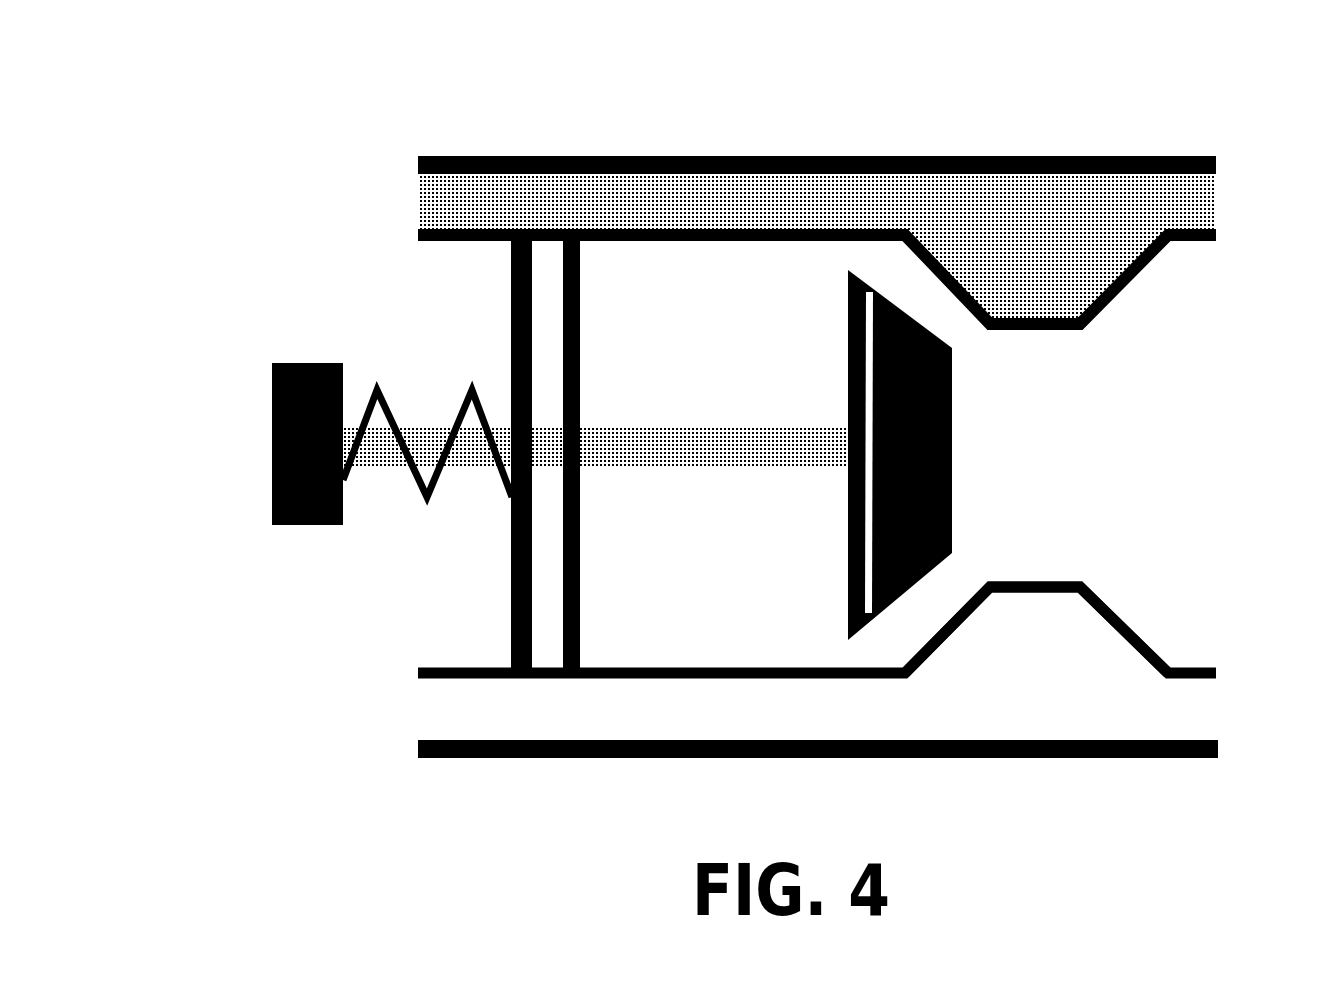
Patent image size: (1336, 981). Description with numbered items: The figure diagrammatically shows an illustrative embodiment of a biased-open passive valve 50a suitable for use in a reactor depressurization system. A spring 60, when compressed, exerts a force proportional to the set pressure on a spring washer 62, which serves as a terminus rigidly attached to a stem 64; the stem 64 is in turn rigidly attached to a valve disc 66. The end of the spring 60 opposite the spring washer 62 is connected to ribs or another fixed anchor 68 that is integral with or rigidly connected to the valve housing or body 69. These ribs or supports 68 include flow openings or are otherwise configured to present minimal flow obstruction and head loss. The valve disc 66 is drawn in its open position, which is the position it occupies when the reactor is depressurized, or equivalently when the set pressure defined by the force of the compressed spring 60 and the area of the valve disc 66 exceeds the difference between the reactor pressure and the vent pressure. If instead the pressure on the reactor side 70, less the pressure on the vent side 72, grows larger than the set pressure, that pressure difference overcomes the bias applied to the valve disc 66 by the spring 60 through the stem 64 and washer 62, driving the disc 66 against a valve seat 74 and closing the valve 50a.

The passive valve 50a is at (1228, 140).
The spring 60 is at (427, 500).
The spring washer 62 is at (280, 530).
The stem 64 is at (628, 427).
The valve disc 66 is at (950, 448).
The ribs or fixed anchor 68 is at (515, 577).
The valve housing or body 69 is at (977, 750).
The reactor side 70 is at (108, 392).
The vent side 72 is at (1280, 411).
The valve seat 74 is at (975, 583).